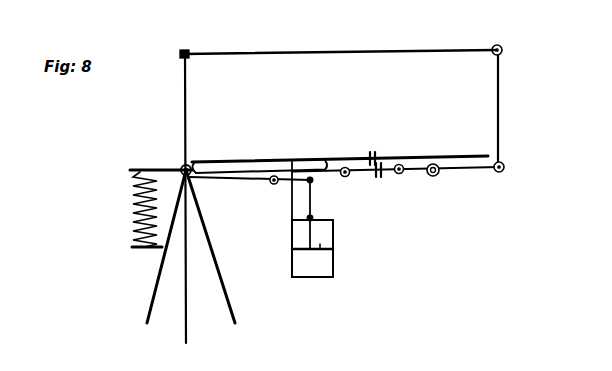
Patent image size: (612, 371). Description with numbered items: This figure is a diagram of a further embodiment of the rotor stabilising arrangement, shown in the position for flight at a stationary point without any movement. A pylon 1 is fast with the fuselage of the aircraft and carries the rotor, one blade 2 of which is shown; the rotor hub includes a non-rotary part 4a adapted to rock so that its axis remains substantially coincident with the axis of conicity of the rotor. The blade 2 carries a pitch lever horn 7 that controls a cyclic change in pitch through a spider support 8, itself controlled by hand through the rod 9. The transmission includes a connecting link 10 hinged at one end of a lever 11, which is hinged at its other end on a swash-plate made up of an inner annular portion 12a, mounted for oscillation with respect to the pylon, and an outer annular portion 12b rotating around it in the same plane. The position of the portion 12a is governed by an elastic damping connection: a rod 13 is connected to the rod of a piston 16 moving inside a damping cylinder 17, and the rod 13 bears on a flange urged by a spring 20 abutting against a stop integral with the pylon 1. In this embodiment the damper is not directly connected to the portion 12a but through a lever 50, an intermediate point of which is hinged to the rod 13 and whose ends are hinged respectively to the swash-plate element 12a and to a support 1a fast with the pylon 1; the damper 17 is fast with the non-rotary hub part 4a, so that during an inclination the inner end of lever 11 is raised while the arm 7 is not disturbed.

The pylon 1 is at (152, 303).
The support 1a is at (241, 184).
The blade 2 is at (453, 155).
The non-rotary part of the hub 4a is at (253, 162).
The pitch lever horn 7 is at (428, 177).
The spider support 8 is at (305, 52).
The rod 9 is at (190, 89).
The connecting link 10 is at (501, 96).
The lever 11 is at (473, 171).
The inner annular portion of the swash-plate 12a is at (328, 163).
The outer annular portion of the swash-plate 12b is at (386, 175).
The rod 13 is at (313, 193).
The piston 16 is at (303, 251).
The damping cylinder 17 is at (337, 268).
The spring 20 is at (142, 199).
The lever 50 is at (327, 183).